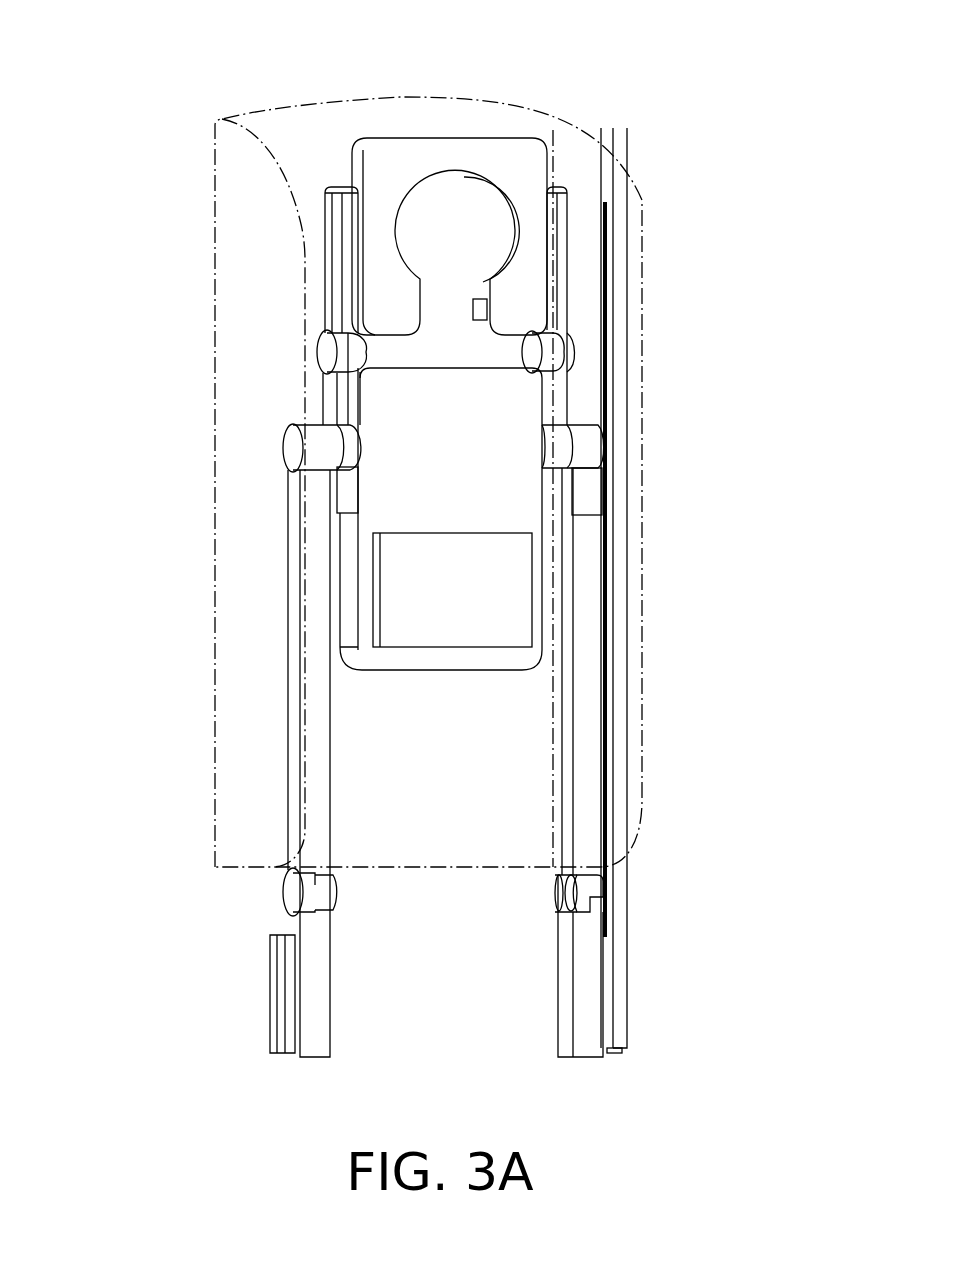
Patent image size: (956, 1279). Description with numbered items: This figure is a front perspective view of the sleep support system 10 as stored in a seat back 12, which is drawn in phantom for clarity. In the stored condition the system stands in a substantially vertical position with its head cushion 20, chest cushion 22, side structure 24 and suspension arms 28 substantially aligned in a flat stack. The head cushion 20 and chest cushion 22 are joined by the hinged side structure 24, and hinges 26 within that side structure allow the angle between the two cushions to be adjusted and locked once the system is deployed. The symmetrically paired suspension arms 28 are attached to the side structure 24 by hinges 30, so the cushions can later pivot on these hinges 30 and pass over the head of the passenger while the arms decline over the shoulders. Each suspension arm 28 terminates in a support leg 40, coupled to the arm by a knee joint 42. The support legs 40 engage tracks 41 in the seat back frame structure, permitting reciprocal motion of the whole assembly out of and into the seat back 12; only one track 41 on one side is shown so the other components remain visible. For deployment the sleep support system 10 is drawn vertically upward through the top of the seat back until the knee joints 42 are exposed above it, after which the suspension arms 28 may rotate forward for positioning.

The sleep support system 10 is at (418, 762).
The seat back 12 is at (257, 113).
The head cushion 20 is at (507, 155).
The chest cushion 22 is at (480, 452).
The side structure 24 is at (346, 268).
The hinges 26 is at (335, 350).
The suspension arms 28 is at (292, 718).
The hinges 30 is at (290, 448).
The support legs 40 is at (320, 1008).
The tracks 41 is at (618, 993).
The knee joints 42 is at (293, 893).